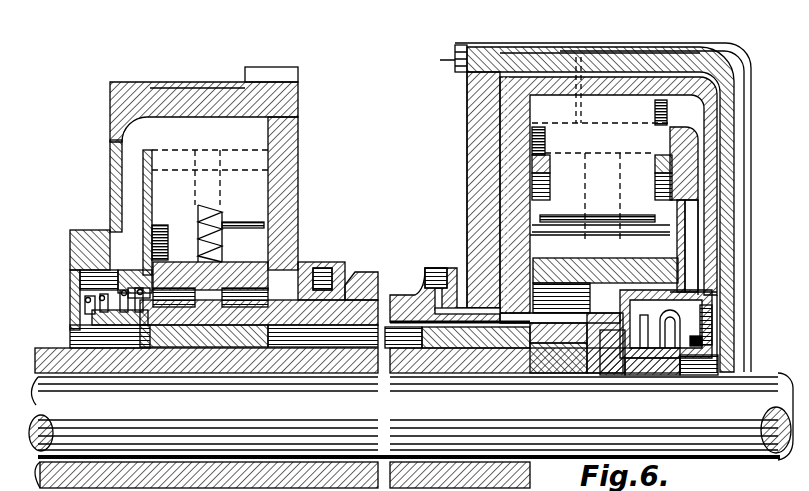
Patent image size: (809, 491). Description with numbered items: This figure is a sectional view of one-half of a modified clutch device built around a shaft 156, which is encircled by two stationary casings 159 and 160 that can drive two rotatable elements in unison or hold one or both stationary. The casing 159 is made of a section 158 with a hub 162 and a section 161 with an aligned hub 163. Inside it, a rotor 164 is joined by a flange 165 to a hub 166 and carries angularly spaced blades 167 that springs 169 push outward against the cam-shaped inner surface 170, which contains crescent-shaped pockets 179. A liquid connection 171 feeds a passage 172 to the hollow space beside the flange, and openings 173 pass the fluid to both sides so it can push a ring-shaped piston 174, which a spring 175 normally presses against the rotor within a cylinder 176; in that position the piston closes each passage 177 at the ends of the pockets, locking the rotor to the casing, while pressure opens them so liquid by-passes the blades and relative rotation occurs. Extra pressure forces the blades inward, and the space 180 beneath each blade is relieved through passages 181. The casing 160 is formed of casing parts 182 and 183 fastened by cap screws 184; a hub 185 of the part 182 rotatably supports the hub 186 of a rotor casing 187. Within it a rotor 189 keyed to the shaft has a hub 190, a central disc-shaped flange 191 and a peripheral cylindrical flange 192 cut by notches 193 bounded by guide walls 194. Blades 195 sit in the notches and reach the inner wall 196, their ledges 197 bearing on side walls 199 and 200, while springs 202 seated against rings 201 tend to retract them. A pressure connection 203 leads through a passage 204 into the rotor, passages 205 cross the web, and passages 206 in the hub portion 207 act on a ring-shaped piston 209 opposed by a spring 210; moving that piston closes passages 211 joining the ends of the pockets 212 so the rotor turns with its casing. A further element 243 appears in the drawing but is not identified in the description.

The shaft 156 is at (706, 440).
The casing section 158 is at (283, 180).
The stationary casing 159 is at (283, 135).
The stationary casing 160 is at (478, 130).
The casing section 161 is at (110, 160).
The hub 162 is at (362, 300).
The hub 163 is at (100, 322).
The rotor 164 is at (265, 240).
The flange 165 is at (222, 307).
The hub 166 is at (258, 340).
The blades 167 is at (262, 152).
The springs 169 is at (155, 245).
The inner surface 170 is at (232, 82).
The liquid connection 171 is at (328, 262).
The passage 172 is at (315, 325).
The openings 173 is at (206, 307).
The ring-shaped piston 174 is at (140, 305).
The spring 175 is at (95, 300).
The cylinder 176 is at (85, 272).
The passage 177 is at (132, 195).
The crescent-shaped pocket 179 is at (188, 122).
The space 180 is at (262, 226).
The passages 181 is at (70, 247).
The casing part 182 is at (480, 162).
The casing part 183 is at (625, 85).
The cap screws 184 is at (455, 68).
The hub 185 is at (400, 294).
The hub 186 is at (455, 340).
The rotor casing 187 is at (520, 105).
The rotor 189 is at (660, 290).
The hub 190 is at (560, 350).
The central disc-shaped flange 191 is at (600, 312).
The peripheral cylindrical flange 192 is at (556, 56).
The notches 193 is at (690, 250).
The guide walls 194 is at (682, 235).
The blades 195 is at (640, 137).
The inner wall 196 is at (640, 105).
The ledges 197 is at (660, 229).
The side wall 199 is at (520, 210).
The side wall 200 is at (690, 215).
The rings 201 is at (655, 166).
The springs 202 is at (655, 186).
The pressure connection 203 is at (428, 268).
The passage 204 is at (448, 272).
The passages 205 is at (612, 330).
The passages 206 is at (640, 345).
The hub portion 207 is at (685, 360).
The ring-shaped piston 209 is at (690, 317).
The spring 210 is at (702, 343).
The passages 211 is at (705, 270).
The pockets 212 is at (578, 58).
The block 243 is at (578, 275).